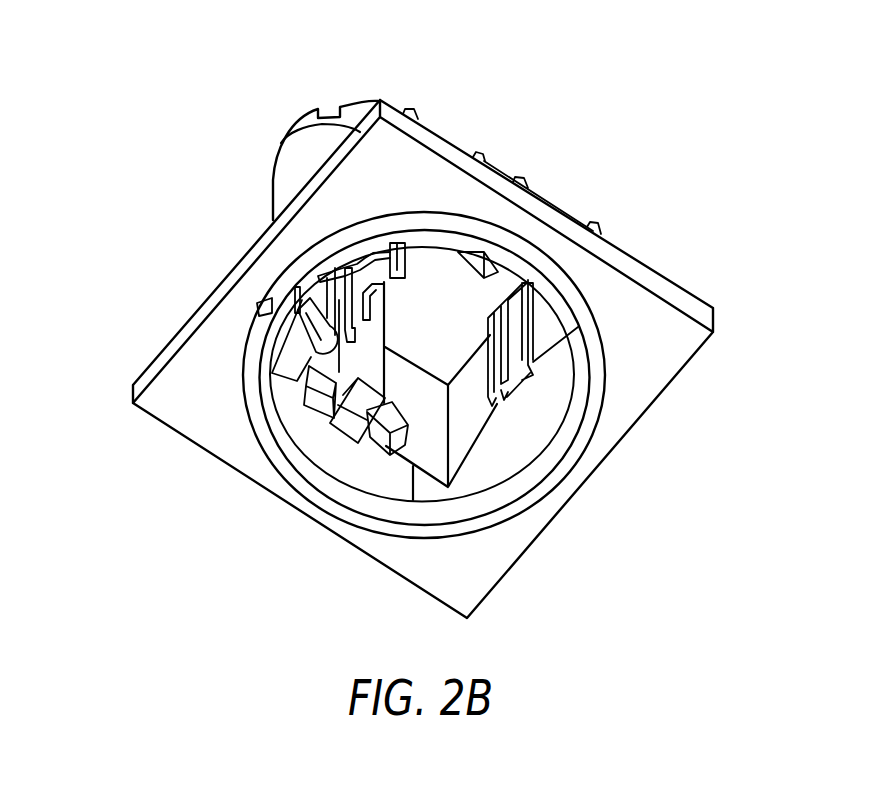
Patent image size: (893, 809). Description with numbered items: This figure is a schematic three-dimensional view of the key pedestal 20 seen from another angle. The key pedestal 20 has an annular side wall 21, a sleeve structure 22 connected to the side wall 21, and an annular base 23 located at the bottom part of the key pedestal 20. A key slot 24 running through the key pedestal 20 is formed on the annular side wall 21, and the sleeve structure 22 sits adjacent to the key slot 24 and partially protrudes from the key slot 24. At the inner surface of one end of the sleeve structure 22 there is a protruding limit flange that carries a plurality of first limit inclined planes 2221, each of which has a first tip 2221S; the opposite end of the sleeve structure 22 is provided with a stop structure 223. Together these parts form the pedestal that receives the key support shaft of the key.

The key pedestal 20 is at (143, 103).
The annular side wall 21 is at (553, 205).
The sleeve structure 22 is at (298, 135).
The annular base 23 is at (585, 433).
The key slot 24 is at (451, 347).
The first limit inclined planes 2221 is at (346, 272).
The first tip 2221S is at (343, 278).
The stop structure 223 is at (300, 302).